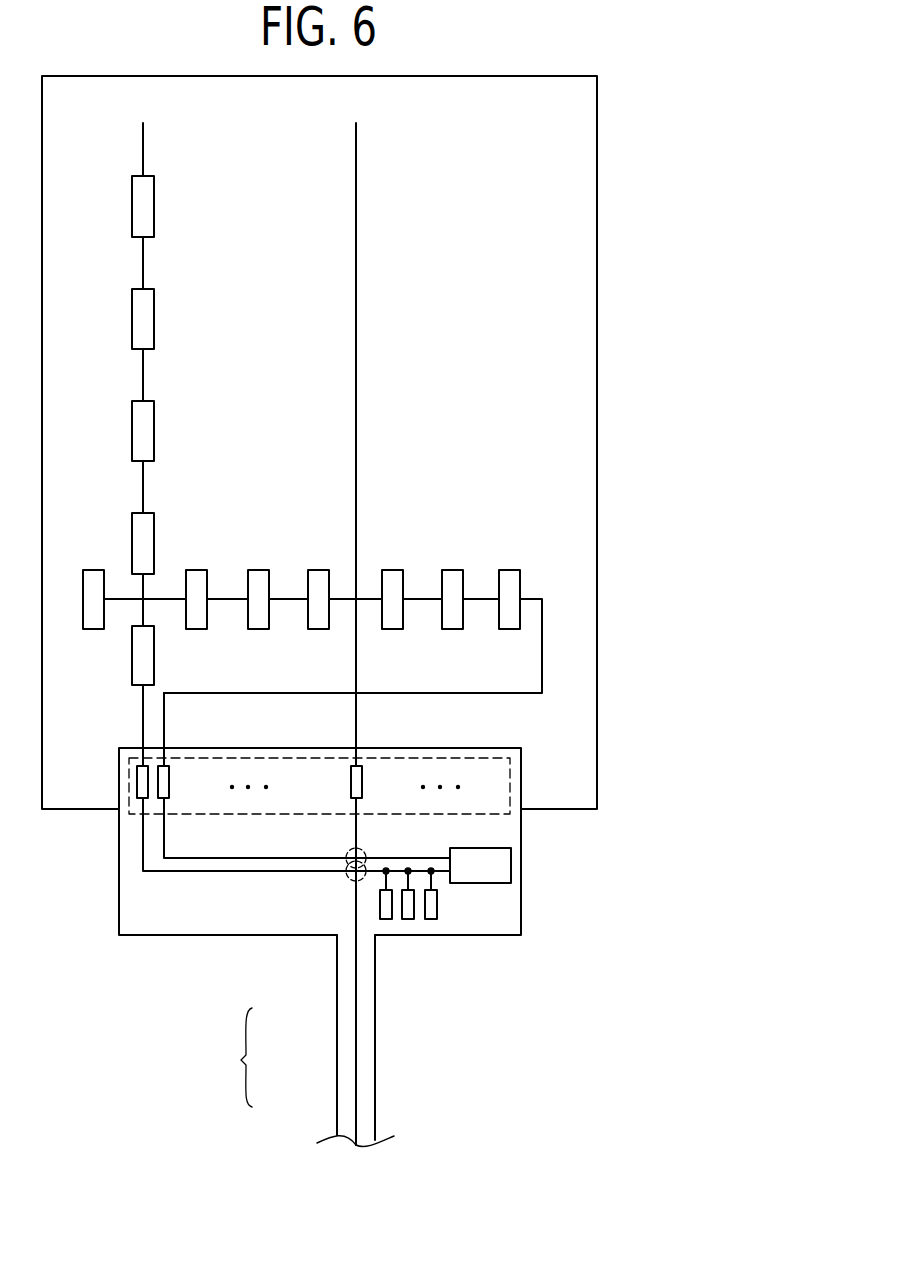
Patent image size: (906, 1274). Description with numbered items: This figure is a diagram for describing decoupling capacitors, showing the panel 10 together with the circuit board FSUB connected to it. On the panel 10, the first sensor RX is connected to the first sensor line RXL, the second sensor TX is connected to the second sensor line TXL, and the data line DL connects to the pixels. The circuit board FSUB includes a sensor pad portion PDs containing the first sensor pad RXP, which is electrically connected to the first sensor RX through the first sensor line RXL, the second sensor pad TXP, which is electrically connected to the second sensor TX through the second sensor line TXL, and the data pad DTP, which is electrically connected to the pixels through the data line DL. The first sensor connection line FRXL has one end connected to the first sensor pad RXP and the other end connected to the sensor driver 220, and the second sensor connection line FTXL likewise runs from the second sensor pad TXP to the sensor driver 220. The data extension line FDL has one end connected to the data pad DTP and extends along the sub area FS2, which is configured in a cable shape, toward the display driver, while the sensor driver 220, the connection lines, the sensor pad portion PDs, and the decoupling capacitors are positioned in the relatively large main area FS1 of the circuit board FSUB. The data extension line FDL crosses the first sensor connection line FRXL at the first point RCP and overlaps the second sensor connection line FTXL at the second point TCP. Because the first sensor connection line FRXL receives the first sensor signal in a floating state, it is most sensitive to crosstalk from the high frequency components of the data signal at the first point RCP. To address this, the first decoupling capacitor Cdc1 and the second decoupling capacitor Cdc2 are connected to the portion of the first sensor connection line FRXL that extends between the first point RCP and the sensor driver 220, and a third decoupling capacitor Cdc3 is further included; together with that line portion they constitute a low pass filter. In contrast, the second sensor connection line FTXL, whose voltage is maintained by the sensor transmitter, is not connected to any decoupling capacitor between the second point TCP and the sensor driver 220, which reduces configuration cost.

The panel 10 is at (597, 443).
The data line DL is at (356, 237).
The first sensor line RXL is at (143, 375).
The first sensor RX is at (154, 430).
The second sensor TX is at (392, 570).
The second sensor line TXL is at (480, 598).
The first sensor pad RXP is at (137, 771).
The second sensor pad TXP is at (169, 777).
The data pad DTP is at (363, 777).
The sensor pad portion PDs is at (510, 787).
The second point TCP is at (346, 847).
The first point RCP is at (346, 882).
The sensor driver 220 is at (511, 865).
The first sensor connection line FRXL is at (163, 872).
The second sensor connection line FTXL is at (222, 858).
The main area FS1 is at (282, 935).
The sub area FS2 is at (337, 1088).
The circuit board FSUB is at (217, 1057).
The first decoupling capacitor Cdc1 is at (386, 919).
The second decoupling capacitor Cdc2 is at (408, 919).
The third decoupling capacitor Cdc3 is at (431, 919).
The data extension line FDL is at (356, 1062).